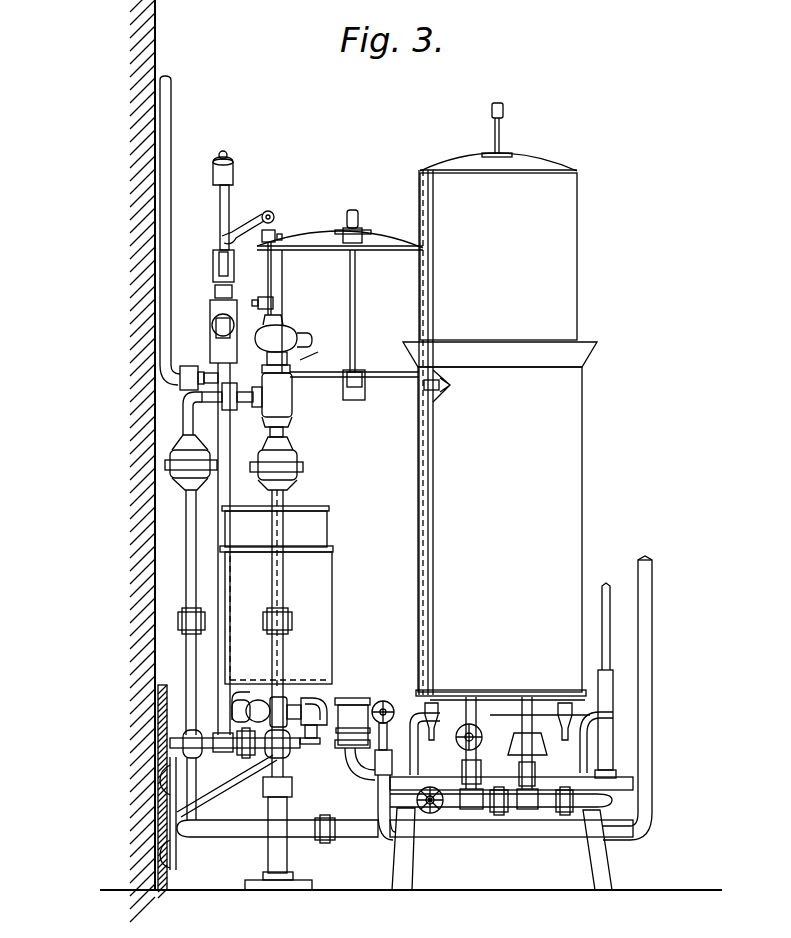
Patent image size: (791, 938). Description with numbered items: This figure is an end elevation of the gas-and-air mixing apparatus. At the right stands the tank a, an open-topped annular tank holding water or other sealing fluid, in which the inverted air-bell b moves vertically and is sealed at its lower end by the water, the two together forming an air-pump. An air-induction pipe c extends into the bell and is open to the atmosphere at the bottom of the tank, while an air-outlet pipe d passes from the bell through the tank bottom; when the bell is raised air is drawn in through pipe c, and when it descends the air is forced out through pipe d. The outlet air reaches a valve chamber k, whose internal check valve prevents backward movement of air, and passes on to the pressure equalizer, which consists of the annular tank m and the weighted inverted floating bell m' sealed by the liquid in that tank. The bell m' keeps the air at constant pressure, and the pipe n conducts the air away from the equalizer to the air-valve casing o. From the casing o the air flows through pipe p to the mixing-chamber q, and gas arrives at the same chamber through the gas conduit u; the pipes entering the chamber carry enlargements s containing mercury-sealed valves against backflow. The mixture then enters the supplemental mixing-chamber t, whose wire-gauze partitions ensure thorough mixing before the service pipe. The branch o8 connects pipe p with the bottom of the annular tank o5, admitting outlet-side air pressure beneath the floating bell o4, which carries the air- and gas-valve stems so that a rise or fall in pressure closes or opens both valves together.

The tank a is at (570, 508).
The inverted air-pumping tank or air-bell b is at (560, 281).
The air-induction pipe c is at (540, 743).
The air-outlet pipe d is at (440, 765).
The valve chamber k is at (337, 718).
The tank of pressure equalizer m is at (378, 432).
The inverted floating tank or bell m' is at (340, 303).
The pipe n is at (320, 700).
The air-valve casing o is at (228, 722).
The inverted cup or bell o4 is at (318, 530).
The annular tank o5 is at (318, 618).
The branch o8 is at (232, 708).
The pipe p is at (285, 657).
The mixing-chamber q is at (291, 399).
The enlargement s is at (283, 460).
The supplemental mixing-chamber t is at (285, 326).
The gas conduit u is at (165, 192).